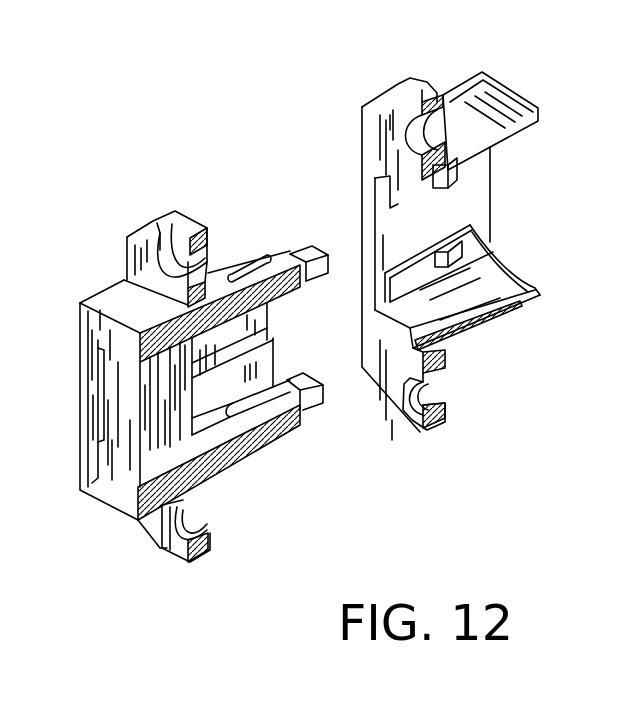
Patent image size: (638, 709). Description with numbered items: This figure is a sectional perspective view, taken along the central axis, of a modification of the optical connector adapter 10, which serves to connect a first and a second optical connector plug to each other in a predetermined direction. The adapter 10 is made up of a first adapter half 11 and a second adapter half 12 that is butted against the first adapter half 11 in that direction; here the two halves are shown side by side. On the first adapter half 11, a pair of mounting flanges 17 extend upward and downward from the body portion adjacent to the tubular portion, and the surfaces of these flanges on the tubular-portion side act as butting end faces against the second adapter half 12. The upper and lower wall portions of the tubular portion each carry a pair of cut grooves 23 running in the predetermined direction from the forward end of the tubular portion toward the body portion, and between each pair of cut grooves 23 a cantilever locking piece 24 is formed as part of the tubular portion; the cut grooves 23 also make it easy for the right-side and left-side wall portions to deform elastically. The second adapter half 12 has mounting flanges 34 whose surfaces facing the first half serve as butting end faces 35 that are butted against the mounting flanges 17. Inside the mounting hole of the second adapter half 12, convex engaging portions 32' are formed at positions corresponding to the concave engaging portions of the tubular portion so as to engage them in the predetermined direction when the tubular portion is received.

The optical connector adapter 10 is at (37, 237).
The first adapter half 11 is at (131, 535).
The second adapter half 12 is at (488, 336).
The mounting flanges 17 is at (181, 226).
The cut grooves 23 is at (262, 263).
The cantilever locking piece 24 is at (309, 250).
The engaging portions 32' is at (500, 212).
The mounting flanges 34 is at (404, 88).
The butting end faces 35 is at (370, 116).